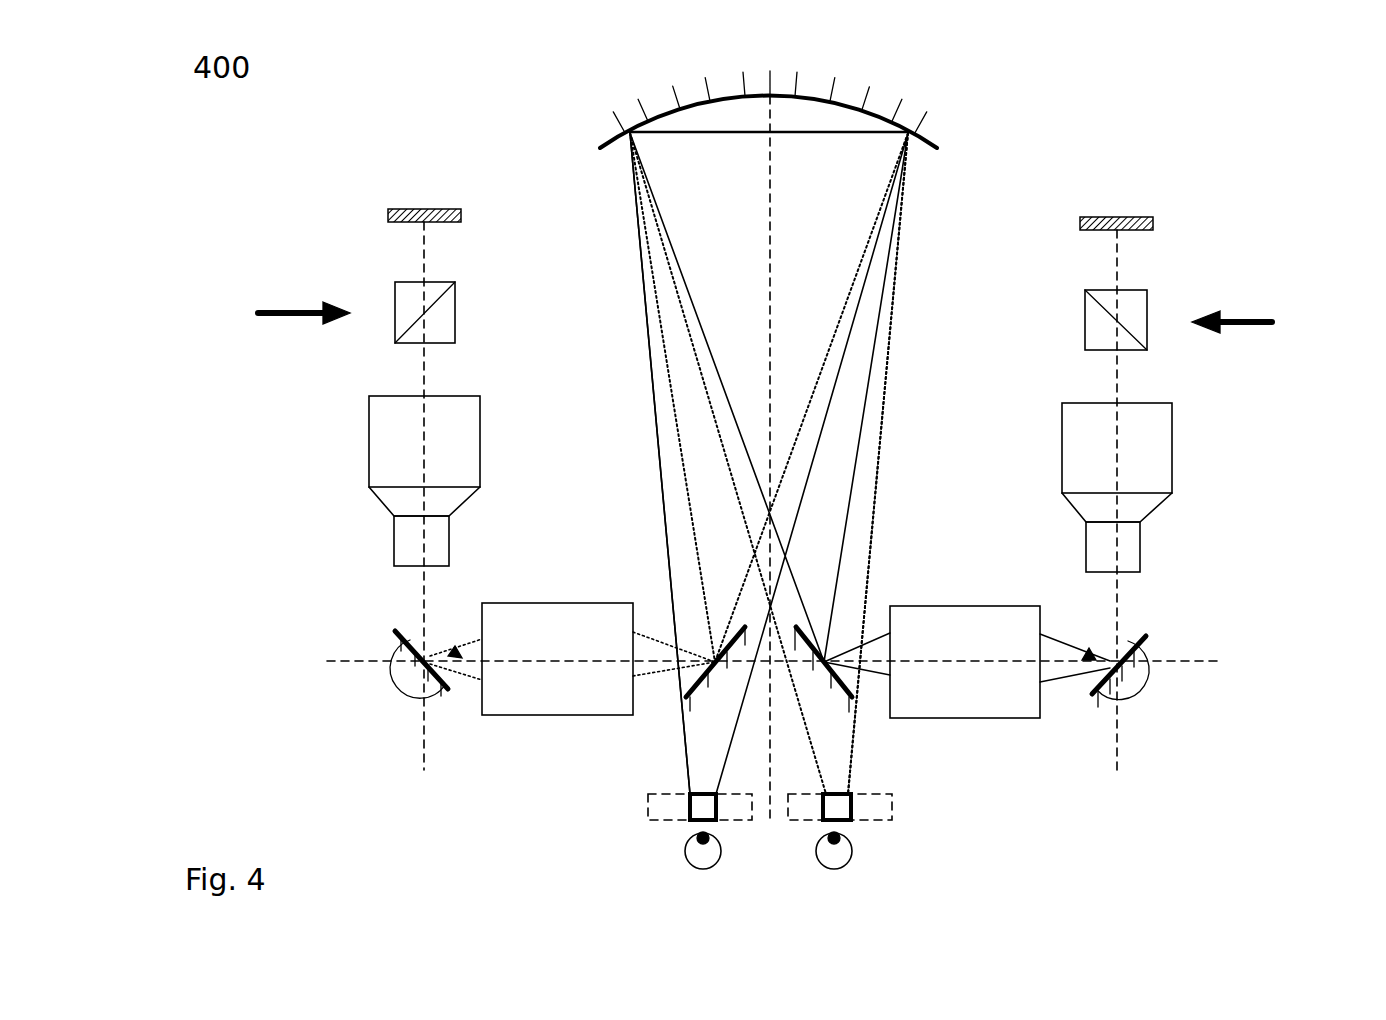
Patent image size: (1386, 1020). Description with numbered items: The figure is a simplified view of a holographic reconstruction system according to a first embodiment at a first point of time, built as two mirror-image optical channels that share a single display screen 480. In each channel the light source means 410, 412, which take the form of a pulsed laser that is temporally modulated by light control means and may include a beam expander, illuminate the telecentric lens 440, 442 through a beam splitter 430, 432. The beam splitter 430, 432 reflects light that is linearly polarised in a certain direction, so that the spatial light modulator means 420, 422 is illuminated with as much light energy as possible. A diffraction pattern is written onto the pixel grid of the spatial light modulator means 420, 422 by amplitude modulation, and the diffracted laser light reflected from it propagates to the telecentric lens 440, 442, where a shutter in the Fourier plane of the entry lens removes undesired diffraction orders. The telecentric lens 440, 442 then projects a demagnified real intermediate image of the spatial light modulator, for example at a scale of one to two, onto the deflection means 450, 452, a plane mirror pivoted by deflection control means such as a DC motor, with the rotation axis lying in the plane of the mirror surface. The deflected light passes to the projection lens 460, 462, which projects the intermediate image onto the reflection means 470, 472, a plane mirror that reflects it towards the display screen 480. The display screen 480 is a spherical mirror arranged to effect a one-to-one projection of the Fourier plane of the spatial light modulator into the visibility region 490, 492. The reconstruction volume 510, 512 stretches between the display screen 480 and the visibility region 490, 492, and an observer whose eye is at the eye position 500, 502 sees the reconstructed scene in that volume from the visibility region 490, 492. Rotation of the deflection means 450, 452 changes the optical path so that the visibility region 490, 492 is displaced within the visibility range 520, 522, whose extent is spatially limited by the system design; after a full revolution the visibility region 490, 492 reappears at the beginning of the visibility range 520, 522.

The light source means 410 is at (293, 312).
The light source means 412 is at (1322, 298).
The spatial light modulator means 420 is at (428, 209).
The spatial light modulator means 422 is at (1118, 217).
The beam splitter 430 is at (455, 315).
The beam splitter 432 is at (1085, 318).
The telecentric lens 440 is at (480, 447).
The telecentric lens 442 is at (1062, 432).
The deflection means 450 is at (445, 692).
The deflection means 452 is at (1145, 635).
The projection lens 460 is at (563, 715).
The projection lens 462 is at (970, 718).
The reflection means 470 is at (688, 698).
The reflection means 472 is at (850, 697).
The display screen 480 is at (890, 106).
The visibility region 490 is at (712, 820).
The visibility region 492 is at (840, 820).
The eye position 500 is at (700, 869).
The eye position 502 is at (832, 869).
The reconstruction volume 510 is at (668, 440).
The reconstruction volume 512 is at (868, 455).
The visibility range 520 is at (665, 820).
The visibility range 522 is at (885, 820).